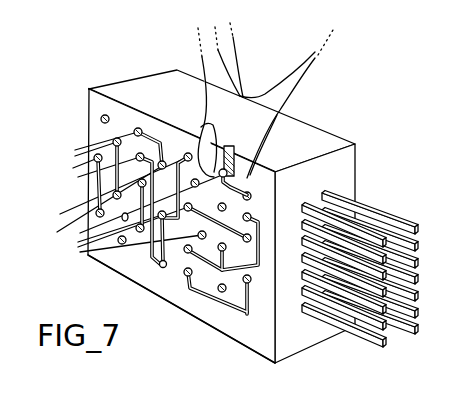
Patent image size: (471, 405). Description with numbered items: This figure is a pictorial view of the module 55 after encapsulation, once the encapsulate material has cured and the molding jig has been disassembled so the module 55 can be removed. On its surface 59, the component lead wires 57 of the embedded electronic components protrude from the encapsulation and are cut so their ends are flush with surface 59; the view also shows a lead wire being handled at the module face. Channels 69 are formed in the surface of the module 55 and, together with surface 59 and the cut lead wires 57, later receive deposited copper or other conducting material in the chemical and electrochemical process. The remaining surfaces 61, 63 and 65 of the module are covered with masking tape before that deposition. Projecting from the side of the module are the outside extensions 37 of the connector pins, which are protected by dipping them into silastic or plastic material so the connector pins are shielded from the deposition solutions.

The module 55 is at (225, 217).
The surface 61 is at (133, 89).
The surface 63 is at (88, 107).
The surface 65 is at (254, 355).
The surface 59 is at (103, 131).
The component lead wires 57 is at (145, 258).
The channels 69 is at (274, 169).
The outside extensions 37 is at (385, 227).